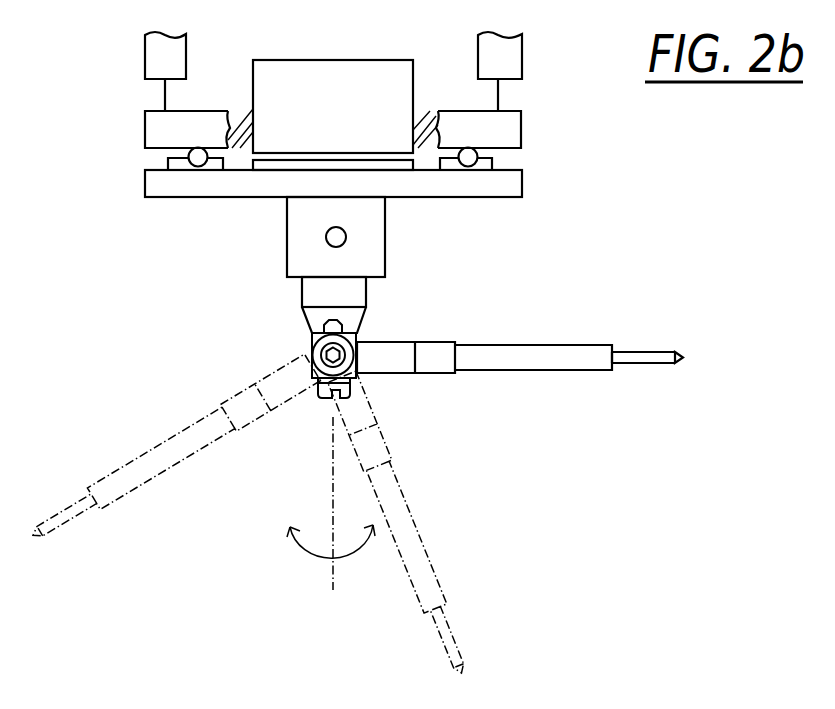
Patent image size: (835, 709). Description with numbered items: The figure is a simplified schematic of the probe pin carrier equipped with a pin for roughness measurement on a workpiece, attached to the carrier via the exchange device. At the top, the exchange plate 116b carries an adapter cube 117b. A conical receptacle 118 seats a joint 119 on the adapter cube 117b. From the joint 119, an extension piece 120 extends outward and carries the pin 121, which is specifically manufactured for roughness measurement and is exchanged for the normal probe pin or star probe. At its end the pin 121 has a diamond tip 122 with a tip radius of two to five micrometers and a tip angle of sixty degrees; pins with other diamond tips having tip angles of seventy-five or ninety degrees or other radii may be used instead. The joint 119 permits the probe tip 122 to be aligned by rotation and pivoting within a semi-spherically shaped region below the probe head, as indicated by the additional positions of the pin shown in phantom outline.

The exchange plate 116b is at (497, 180).
The adapter cube 117b is at (370, 252).
The conical receptacle 118 is at (312, 289).
The joint 119 is at (310, 383).
The extension piece 120 is at (518, 343).
The pin 121 is at (635, 348).
The diamond tip 122 is at (683, 368).